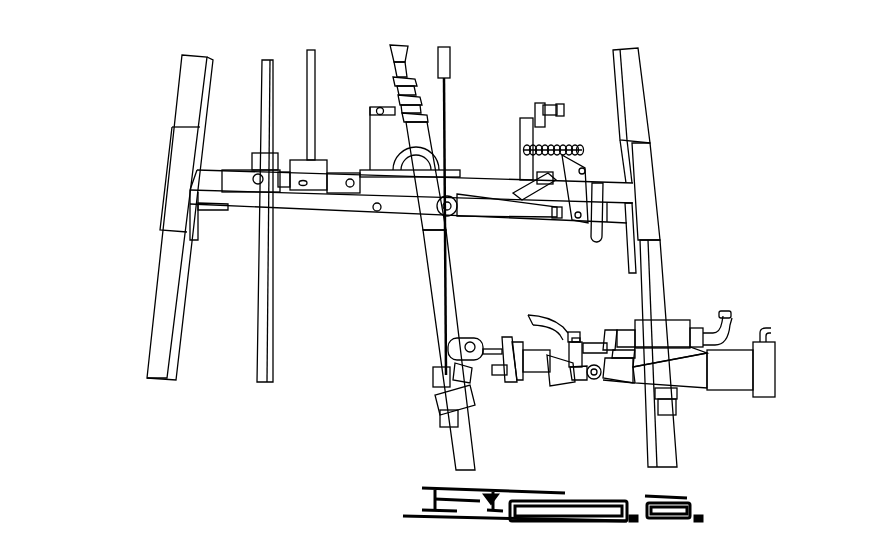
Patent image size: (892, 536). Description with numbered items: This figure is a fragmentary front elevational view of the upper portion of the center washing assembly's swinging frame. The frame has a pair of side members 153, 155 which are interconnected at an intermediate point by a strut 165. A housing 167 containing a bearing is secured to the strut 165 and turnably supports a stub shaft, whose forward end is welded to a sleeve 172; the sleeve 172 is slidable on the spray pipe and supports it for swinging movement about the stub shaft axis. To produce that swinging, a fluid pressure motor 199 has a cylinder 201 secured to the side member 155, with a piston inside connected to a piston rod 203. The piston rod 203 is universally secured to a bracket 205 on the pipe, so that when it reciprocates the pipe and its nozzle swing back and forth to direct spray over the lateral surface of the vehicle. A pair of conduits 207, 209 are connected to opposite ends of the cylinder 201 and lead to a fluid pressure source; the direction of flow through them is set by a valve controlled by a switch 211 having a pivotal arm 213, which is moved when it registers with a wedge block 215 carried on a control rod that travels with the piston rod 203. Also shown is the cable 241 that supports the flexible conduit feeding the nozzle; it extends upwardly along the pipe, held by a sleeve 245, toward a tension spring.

The side member 153 is at (162, 280).
The side member 155 is at (650, 257).
The strut 165 is at (320, 203).
The housing 167 is at (443, 130).
The sleeve 172 is at (423, 263).
The cable 241 is at (448, 235).
The piston rod 203 is at (533, 338).
The bracket 205 is at (467, 337).
The conduit 209 is at (557, 318).
The pivotal arm 213 is at (583, 392).
The wedge block 215 is at (550, 386).
The fluid pressure motor 199 is at (577, 397).
The cylinder 201 is at (642, 383).
The conduit 207 is at (737, 322).
The switch 211 is at (623, 377).
The sleeve 245 is at (447, 410).